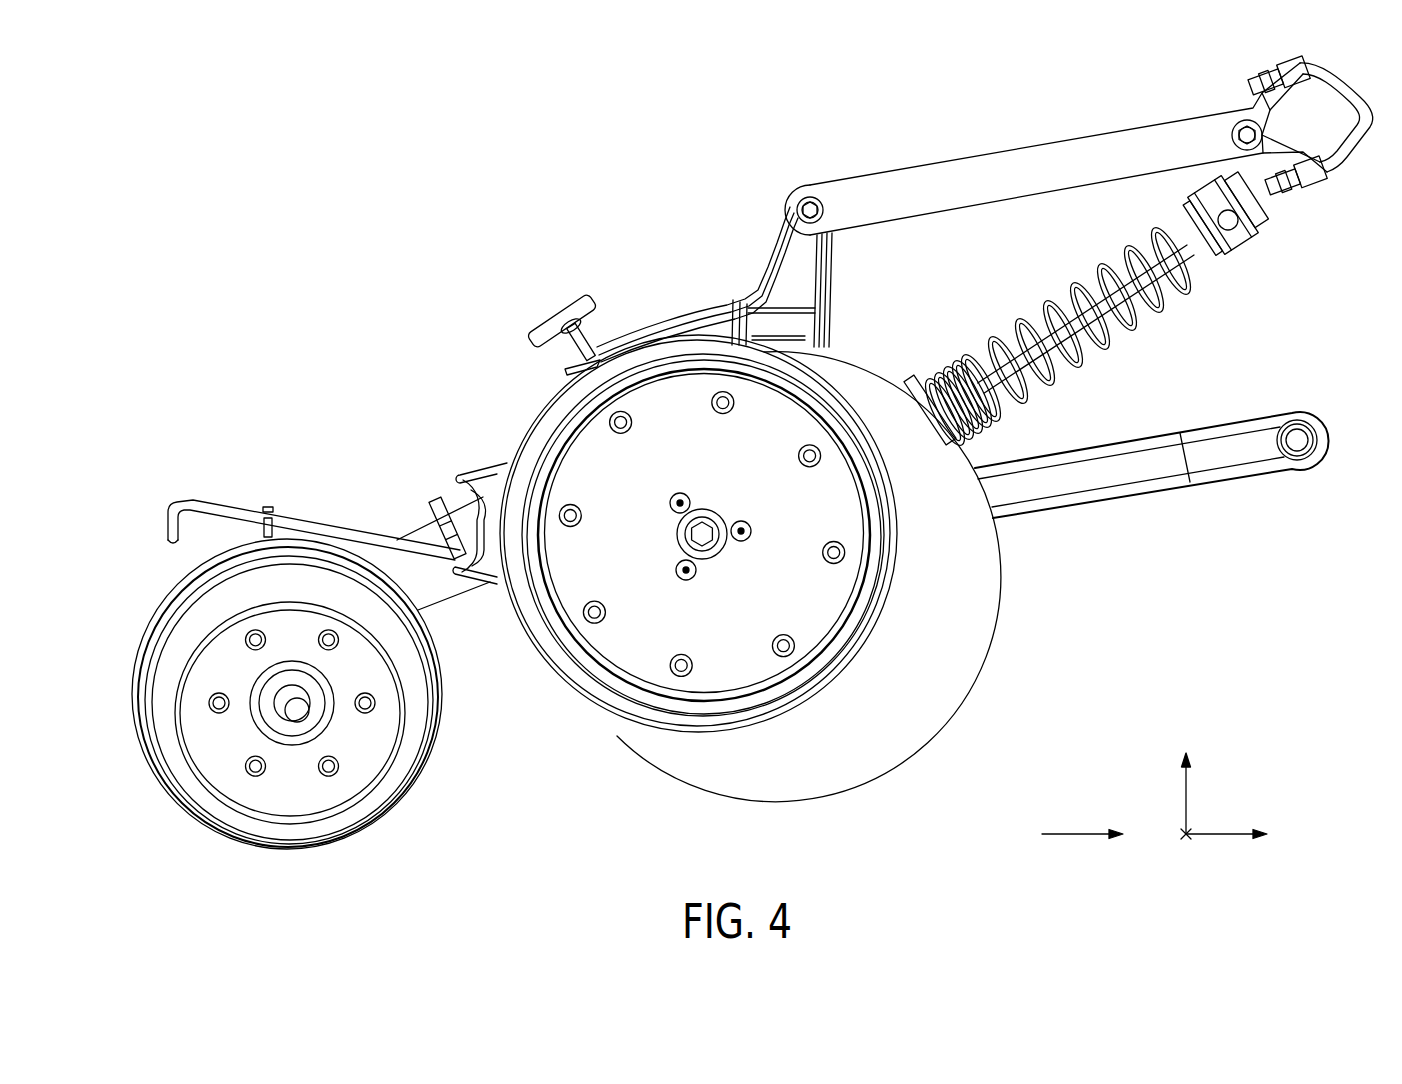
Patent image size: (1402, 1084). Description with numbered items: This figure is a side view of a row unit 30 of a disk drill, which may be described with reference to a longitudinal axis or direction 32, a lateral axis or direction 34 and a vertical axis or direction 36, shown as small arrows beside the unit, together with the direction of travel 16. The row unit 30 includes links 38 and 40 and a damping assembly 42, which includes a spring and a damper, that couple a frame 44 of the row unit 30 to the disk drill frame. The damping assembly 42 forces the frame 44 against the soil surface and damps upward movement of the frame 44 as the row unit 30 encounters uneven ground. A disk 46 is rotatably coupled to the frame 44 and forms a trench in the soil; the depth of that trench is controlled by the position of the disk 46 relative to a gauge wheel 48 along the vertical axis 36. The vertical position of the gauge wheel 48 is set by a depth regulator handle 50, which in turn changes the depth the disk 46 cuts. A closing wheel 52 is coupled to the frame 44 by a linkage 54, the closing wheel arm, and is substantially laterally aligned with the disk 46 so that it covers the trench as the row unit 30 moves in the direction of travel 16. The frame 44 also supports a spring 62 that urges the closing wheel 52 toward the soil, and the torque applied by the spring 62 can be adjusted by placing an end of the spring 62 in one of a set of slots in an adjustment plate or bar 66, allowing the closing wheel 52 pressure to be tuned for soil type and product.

The direction of travel 16 is at (1077, 832).
The row unit 30 is at (814, 103).
The longitudinal axis or direction 32 is at (1220, 838).
The lateral axis or direction 34 is at (1187, 838).
The vertical axis or direction 36 is at (1187, 800).
The link 38 is at (1154, 497).
The link 40 is at (1035, 147).
The damping assembly 42 is at (1185, 314).
The frame 44 is at (729, 273).
The disk 46 is at (968, 655).
The gauge wheel 48 is at (542, 674).
The depth regulator handle 50 is at (597, 331).
The closing wheel 52 is at (171, 588).
The linkage 54 is at (420, 535).
The spring 62 is at (318, 522).
The adjustment plate or bar 66 is at (268, 503).